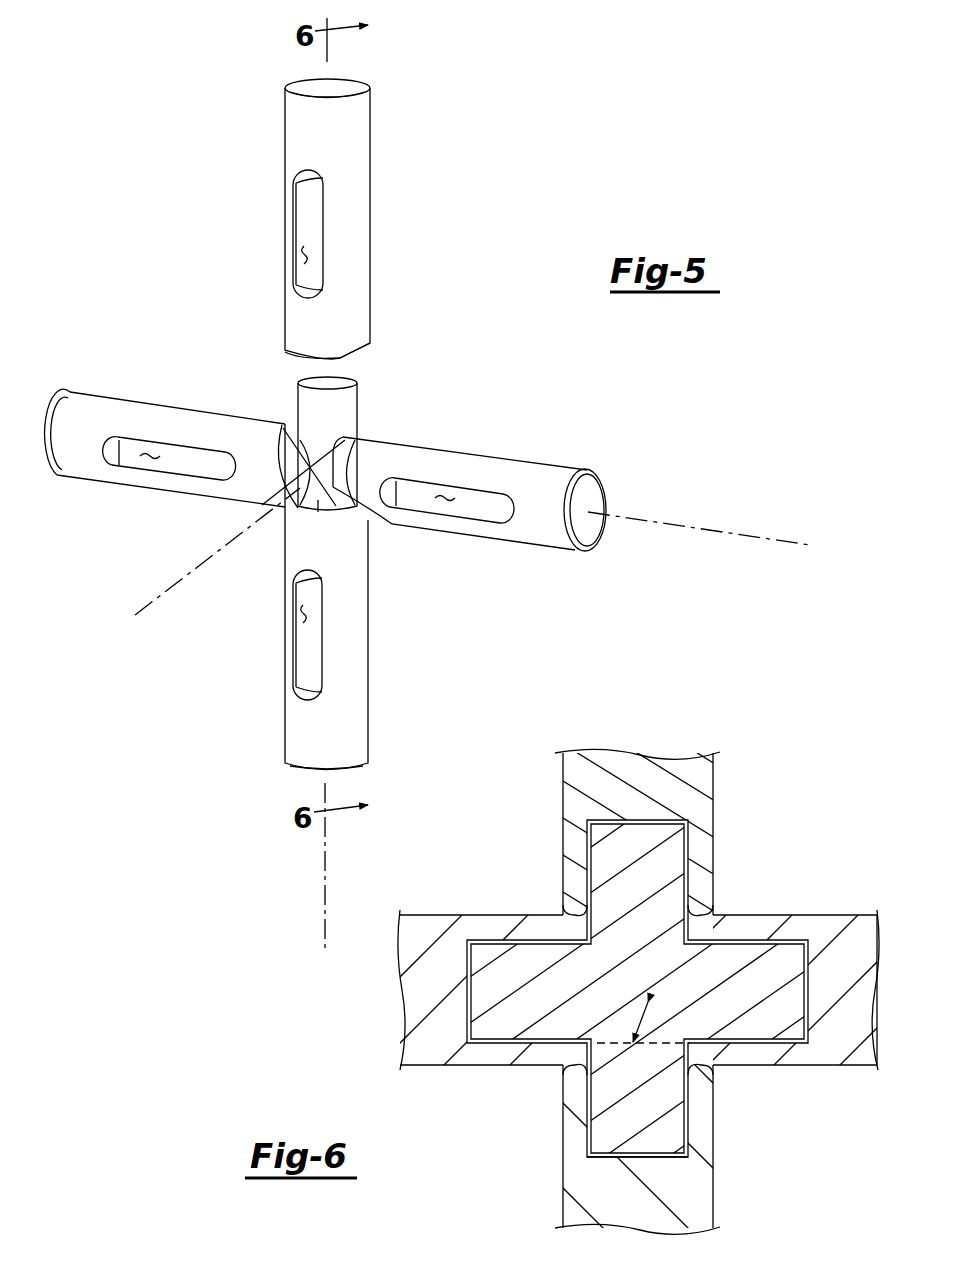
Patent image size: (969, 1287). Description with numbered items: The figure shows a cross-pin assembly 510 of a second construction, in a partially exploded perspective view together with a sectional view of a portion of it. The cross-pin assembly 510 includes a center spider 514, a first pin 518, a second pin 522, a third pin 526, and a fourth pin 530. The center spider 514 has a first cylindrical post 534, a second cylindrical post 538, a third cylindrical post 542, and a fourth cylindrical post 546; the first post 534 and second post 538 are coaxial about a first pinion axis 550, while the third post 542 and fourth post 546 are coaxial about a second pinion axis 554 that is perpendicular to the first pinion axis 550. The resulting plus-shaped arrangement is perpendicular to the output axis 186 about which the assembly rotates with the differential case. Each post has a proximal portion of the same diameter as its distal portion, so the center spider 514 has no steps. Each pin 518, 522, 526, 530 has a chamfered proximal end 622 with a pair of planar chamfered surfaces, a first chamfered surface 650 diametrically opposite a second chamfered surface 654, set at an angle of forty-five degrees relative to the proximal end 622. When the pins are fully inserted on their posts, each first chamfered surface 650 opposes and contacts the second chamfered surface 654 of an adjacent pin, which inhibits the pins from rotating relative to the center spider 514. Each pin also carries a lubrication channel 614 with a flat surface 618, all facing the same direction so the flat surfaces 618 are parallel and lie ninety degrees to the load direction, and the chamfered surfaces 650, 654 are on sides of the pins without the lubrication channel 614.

In FIG. 5, the cross-pin assembly 510 is at (157, 288).
In FIG. 5, the center spider 514 is at (316, 498).
In FIG. 6, the center spider 514 is at (645, 962).
In FIG. 5, the first pin 518 is at (368, 242).
In FIG. 6, the first pin 518 is at (672, 765).
In FIG. 5, the second pin 522 is at (285, 700).
In FIG. 6, the second pin 522 is at (635, 1018).
In FIG. 5, the third pin 526 is at (93, 390).
In FIG. 5, the fourth pin 530 is at (566, 466).
In FIG. 6, the fourth pin 530 is at (848, 1050).
In FIG. 5, the first cylindrical post 534 is at (343, 397).
In FIG. 6, the first cylindrical post 534 is at (660, 852).
In FIG. 6, the second cylindrical post 538 is at (610, 1150).
In FIG. 6, the third cylindrical post 542 is at (485, 993).
In FIG. 6, the fourth cylindrical post 546 is at (790, 1003).
In FIG. 6, the first pinion axis 550 is at (325, 915).
In FIG. 5, the second pinion axis 554 is at (772, 537).
In FIG. 5, the output axis 186 is at (140, 623).
In FIG. 5, the lubrication channel 614 is at (300, 232).
In FIG. 5, the flat surface 618 is at (298, 258).
In FIG. 5, the proximal end 622 is at (288, 350).
In FIG. 5, the first chamfered surface 650 is at (360, 405).
In FIG. 6, the first chamfered surface 650 is at (570, 912).
In FIG. 5, the second chamfered surface 654 is at (380, 355).
In FIG. 6, the second chamfered surface 654 is at (565, 935).